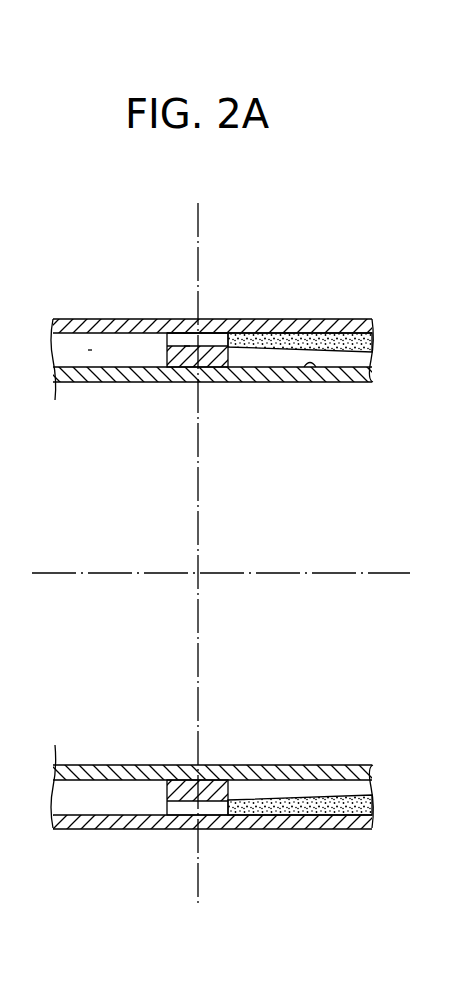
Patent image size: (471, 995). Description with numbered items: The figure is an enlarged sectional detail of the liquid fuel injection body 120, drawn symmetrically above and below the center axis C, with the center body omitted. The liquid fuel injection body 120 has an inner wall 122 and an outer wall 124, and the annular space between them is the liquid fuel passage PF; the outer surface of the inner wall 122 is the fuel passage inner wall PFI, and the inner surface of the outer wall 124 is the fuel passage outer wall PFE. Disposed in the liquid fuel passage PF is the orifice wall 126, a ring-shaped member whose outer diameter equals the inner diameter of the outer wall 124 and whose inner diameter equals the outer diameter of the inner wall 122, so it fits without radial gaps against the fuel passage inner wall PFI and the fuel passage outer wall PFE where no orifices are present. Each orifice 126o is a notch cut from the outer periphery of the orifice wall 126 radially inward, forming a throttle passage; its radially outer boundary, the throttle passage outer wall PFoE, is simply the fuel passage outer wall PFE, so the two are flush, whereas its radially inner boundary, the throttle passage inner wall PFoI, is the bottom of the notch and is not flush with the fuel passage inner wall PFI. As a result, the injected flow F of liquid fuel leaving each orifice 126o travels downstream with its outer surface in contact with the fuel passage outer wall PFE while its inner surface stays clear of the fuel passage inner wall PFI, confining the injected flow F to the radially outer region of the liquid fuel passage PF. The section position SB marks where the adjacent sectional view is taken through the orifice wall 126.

The liquid fuel injection body 120 is at (83, 299).
The inner wall 122 is at (250, 382).
The outer wall 124 is at (250, 328).
The orifice wall 126 is at (166, 347).
The orifice 126o is at (219, 333).
The throttle passage outer wall PFoE is at (183, 334).
The throttle passage inner wall PFoI is at (187, 348).
The liquid fuel passage PF is at (90, 350).
The fuel passage inner wall PFI is at (310, 368).
The fuel passage outer wall PFE is at (286, 334).
The injected flow F is at (330, 342).
The section line SB is at (194, 206).
The center axis C is at (234, 575).